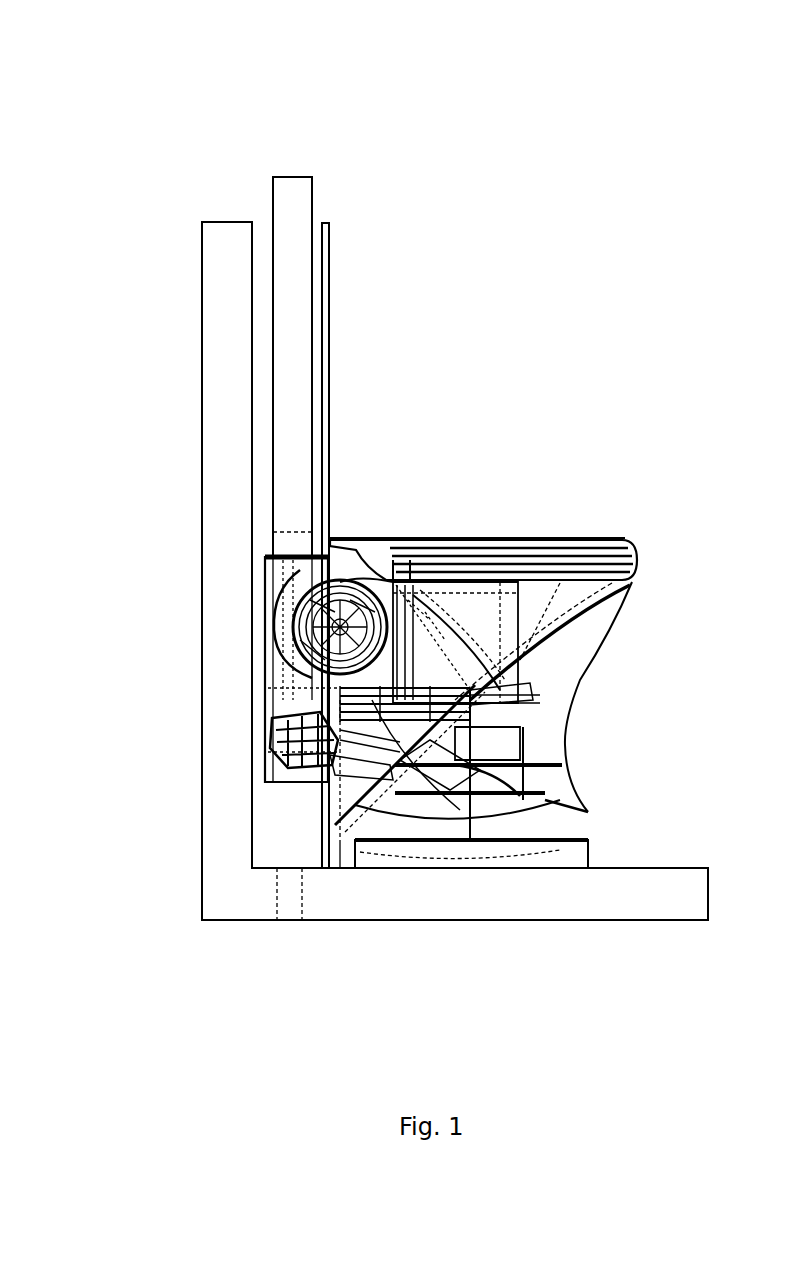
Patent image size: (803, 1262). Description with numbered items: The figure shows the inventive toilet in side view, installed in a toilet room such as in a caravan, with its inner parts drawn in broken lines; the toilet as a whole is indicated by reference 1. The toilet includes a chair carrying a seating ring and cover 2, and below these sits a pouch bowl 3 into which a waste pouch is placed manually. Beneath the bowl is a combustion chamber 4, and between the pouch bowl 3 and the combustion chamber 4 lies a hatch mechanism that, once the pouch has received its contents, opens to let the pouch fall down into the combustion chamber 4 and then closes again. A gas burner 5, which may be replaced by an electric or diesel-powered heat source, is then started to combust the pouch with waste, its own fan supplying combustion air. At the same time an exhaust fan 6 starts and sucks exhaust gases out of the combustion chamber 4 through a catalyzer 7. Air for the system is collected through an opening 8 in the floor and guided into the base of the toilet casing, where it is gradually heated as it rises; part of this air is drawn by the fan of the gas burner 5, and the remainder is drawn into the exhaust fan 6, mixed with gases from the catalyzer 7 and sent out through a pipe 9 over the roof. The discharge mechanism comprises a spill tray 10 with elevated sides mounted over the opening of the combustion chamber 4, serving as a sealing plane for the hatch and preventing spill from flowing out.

The toilet flushing assembly 1 is at (533, 692).
The seating ring and cover 2 is at (580, 545).
The pouch bowl 3 is at (617, 602).
The combustion chamber 4 is at (500, 745).
The gas burner 5 is at (330, 752).
The exhaust fan 6 is at (300, 601).
The catalyzer 7 is at (332, 699).
The opening in the floor 8 is at (301, 921).
The pipe 9 is at (293, 192).
The spill tray 10 is at (547, 813).